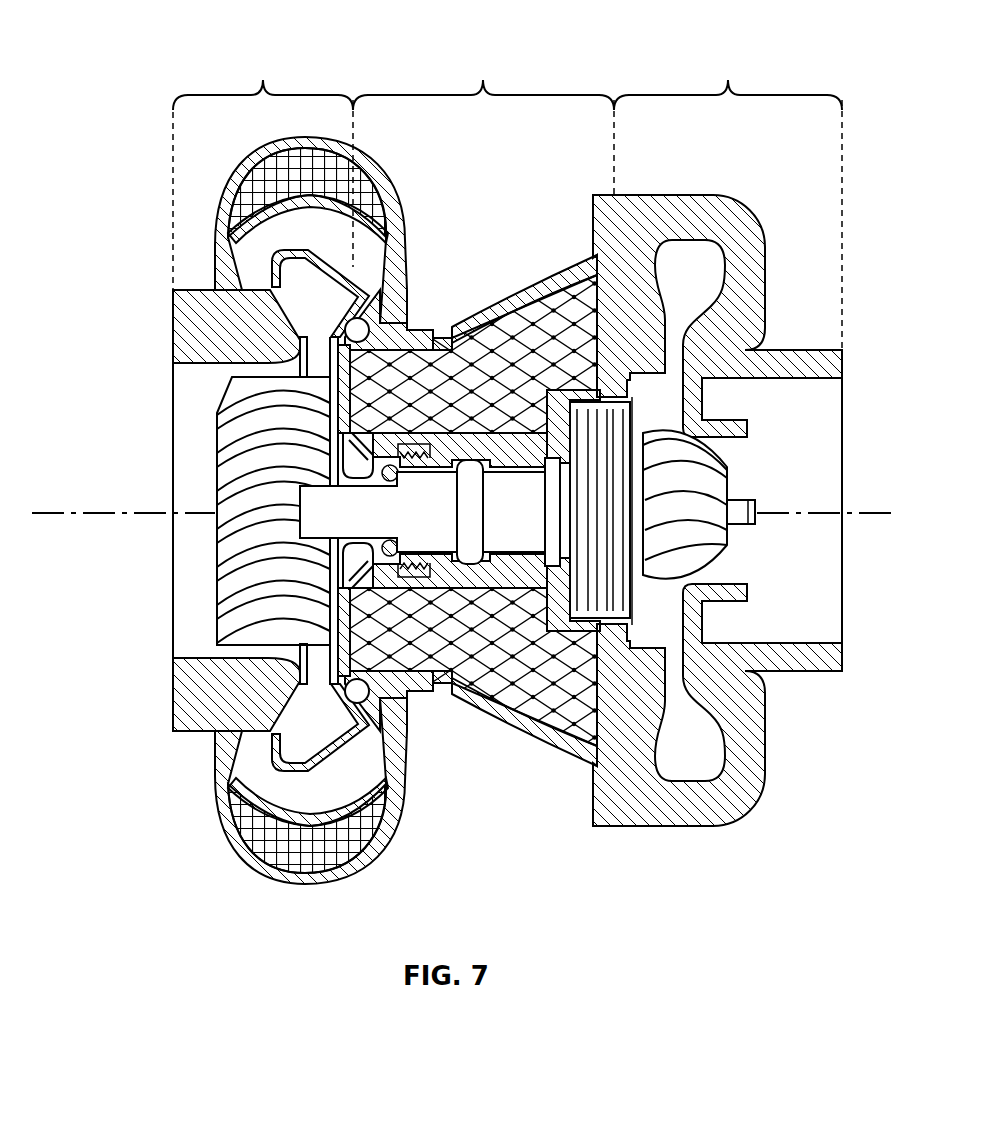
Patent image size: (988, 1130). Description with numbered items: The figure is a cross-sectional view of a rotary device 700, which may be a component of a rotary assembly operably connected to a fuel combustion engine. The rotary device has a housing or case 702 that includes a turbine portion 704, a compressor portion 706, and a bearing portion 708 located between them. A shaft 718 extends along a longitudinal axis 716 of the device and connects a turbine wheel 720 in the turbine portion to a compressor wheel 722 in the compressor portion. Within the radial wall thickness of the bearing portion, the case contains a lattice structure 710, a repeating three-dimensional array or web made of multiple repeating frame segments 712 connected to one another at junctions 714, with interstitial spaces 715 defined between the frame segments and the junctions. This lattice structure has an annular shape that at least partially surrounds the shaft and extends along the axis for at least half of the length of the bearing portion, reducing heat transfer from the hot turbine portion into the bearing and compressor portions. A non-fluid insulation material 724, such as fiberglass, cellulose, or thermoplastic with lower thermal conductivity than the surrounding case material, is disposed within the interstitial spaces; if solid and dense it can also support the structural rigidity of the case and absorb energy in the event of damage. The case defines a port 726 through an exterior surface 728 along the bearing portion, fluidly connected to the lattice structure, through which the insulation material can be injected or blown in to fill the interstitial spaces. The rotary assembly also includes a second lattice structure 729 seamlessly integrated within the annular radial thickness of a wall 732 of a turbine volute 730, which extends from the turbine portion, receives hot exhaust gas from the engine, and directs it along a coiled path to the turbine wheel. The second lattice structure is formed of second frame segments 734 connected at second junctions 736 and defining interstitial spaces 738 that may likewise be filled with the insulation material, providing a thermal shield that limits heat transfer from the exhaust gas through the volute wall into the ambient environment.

The rotary device 700 is at (199, 58).
The case 702 is at (585, 238).
The turbine portion 704 is at (263, 80).
The compressor portion 706 is at (728, 80).
The bearing portion 708 is at (483, 80).
The lattice structure 710 is at (465, 668).
The frame segments 712 is at (514, 660).
The junctions 714 is at (570, 752).
The interstitial spaces 715 is at (485, 657).
The longitudinal axis 716 is at (68, 513).
The shaft 718 is at (522, 493).
The turbine wheel 720 is at (227, 453).
The compressor wheel 722 is at (693, 467).
The non-fluid insulation material 724 is at (478, 348).
The port 726 is at (443, 330).
The exterior surface 728 is at (513, 300).
The second lattice structure 729 is at (306, 168).
The turbine volute 730 is at (223, 250).
The wall 732 is at (373, 158).
The second frame segments 734 is at (275, 848).
The second junctions 736 is at (272, 847).
The interstitial spaces 738 is at (308, 851).